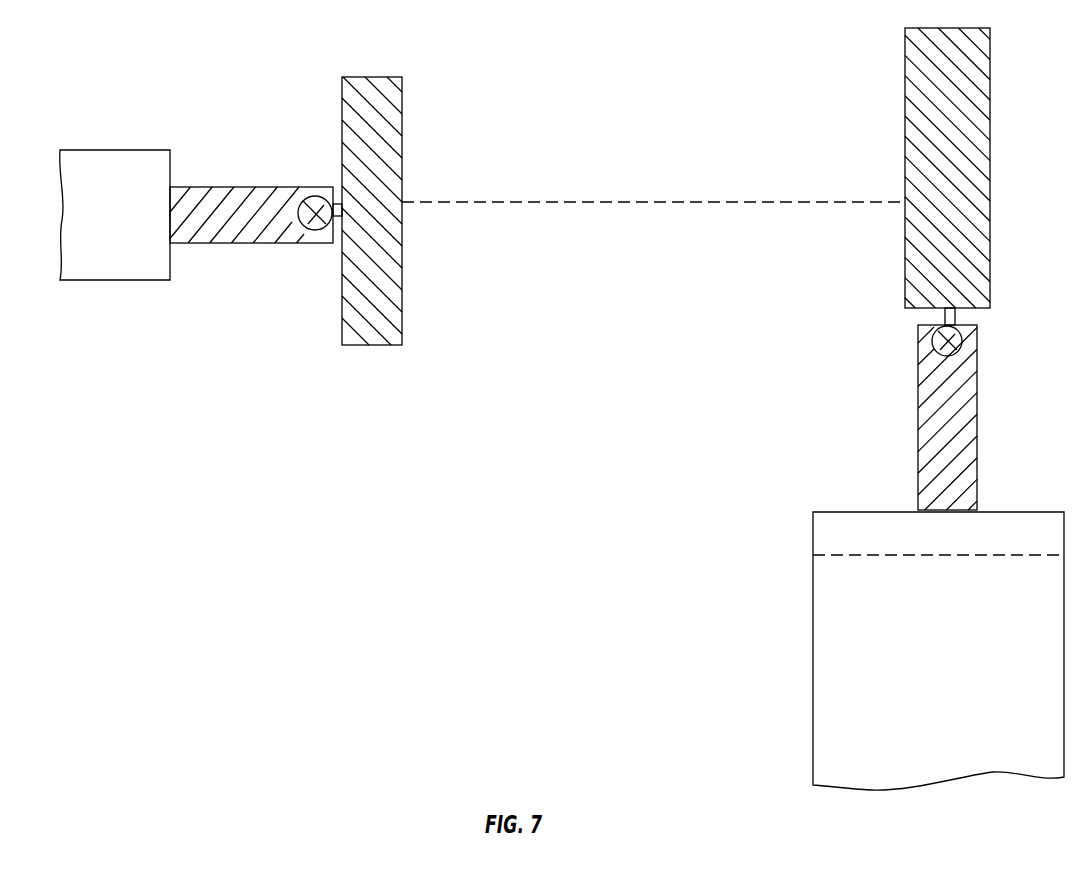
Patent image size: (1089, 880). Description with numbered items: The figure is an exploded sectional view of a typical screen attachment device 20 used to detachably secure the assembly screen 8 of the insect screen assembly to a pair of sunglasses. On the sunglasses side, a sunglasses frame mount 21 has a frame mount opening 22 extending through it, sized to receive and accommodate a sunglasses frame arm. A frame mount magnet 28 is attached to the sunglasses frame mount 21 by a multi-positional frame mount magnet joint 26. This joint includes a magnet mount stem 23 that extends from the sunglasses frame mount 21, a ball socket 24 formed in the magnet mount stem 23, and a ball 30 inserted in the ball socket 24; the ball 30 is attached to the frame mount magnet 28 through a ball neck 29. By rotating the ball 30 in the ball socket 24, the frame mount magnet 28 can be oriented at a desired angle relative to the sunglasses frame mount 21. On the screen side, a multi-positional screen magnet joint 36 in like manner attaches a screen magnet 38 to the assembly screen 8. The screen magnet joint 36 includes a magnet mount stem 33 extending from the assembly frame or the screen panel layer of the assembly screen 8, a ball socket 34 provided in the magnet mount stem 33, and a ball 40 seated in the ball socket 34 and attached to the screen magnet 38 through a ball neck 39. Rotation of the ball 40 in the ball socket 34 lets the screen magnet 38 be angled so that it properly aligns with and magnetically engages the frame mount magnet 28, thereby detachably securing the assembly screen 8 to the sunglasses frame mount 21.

The assembly screen 8 is at (115, 283).
The screen attachment device 20 is at (276, 559).
The sunglasses frame mount 21 is at (830, 592).
The frame mount opening 22 is at (856, 647).
The magnet mount stem 23 is at (940, 445).
The ball socket 24 is at (978, 326).
The multi-positional frame mount magnet joint 26 is at (874, 389).
The frame mount magnet 28 is at (980, 188).
The ball neck 29 is at (950, 320).
The ball 30 is at (938, 336).
The magnet mount stem 33 is at (248, 203).
The ball socket 34 is at (330, 188).
The multi-positional screen magnet joint 36 is at (218, 137).
The screen magnet 38 is at (385, 126).
The ball neck 39 is at (338, 218).
The ball 40 is at (322, 232).